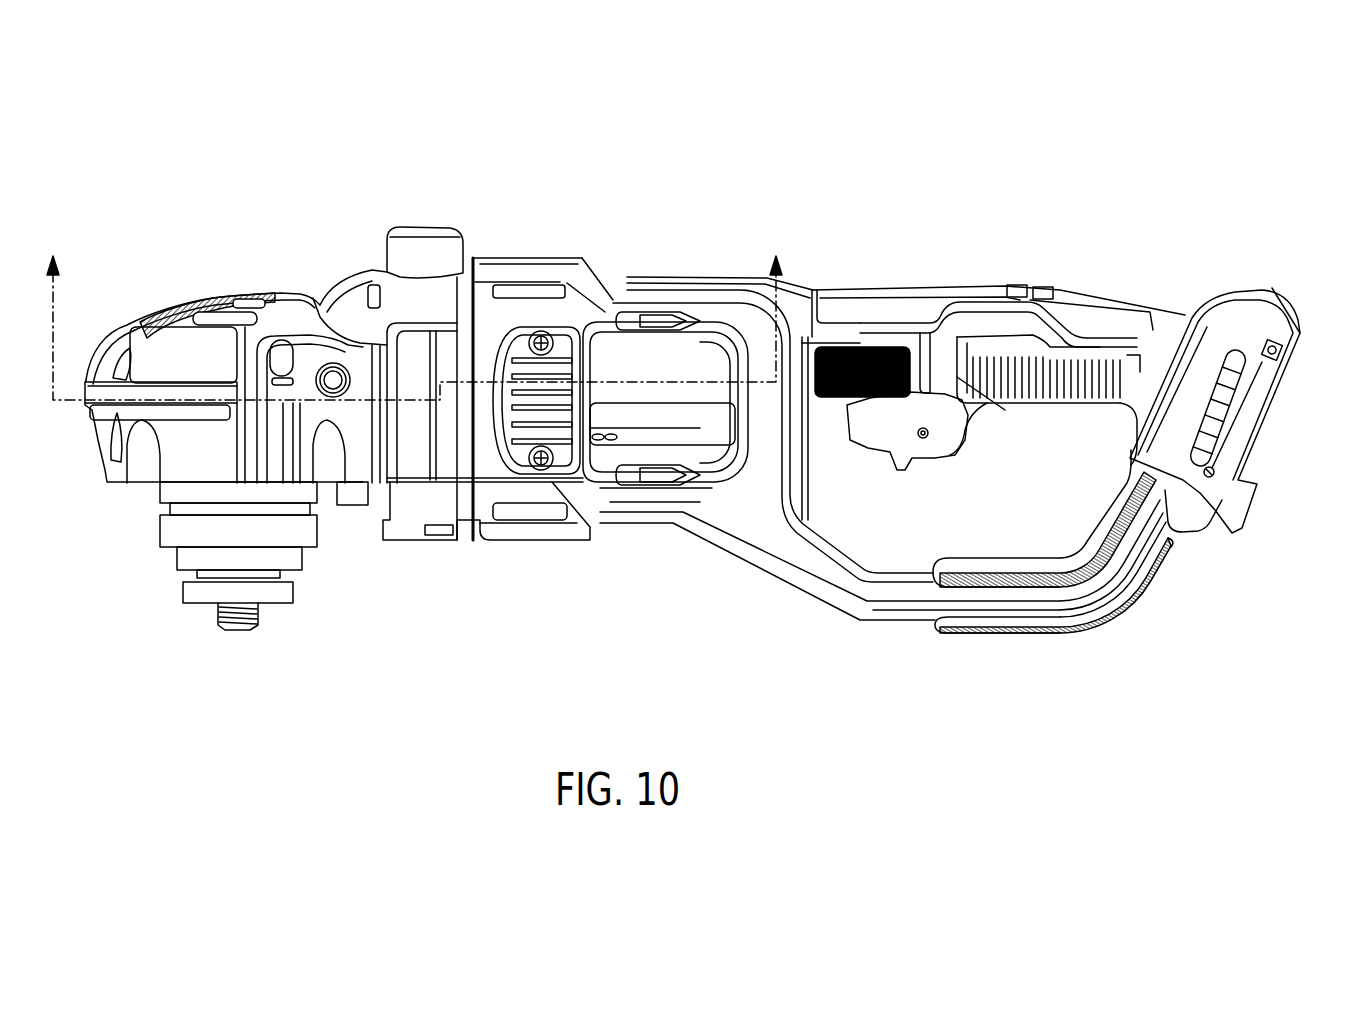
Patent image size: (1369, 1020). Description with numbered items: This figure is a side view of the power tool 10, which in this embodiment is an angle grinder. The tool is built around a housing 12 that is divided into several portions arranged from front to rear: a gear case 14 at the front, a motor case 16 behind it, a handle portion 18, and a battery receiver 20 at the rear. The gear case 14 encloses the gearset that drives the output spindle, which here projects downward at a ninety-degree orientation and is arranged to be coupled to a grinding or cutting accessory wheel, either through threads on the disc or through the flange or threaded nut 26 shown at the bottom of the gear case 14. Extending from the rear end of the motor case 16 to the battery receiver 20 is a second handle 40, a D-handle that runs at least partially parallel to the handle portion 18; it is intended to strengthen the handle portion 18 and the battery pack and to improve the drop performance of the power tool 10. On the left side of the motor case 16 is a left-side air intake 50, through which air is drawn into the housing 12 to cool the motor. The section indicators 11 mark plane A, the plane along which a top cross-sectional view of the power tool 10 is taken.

The power tool 10 is at (701, 375).
The section line 11 is at (417, 306).
The housing 12 is at (758, 376).
The gear case 14 is at (236, 346).
The motor case 16 is at (498, 355).
The handle portion 18 is at (993, 332).
The battery receiver 20 is at (1243, 410).
The flange (or threaded nut) 26 is at (254, 556).
The second handle 40 is at (886, 571).
The left-side air intake 50 is at (513, 521).